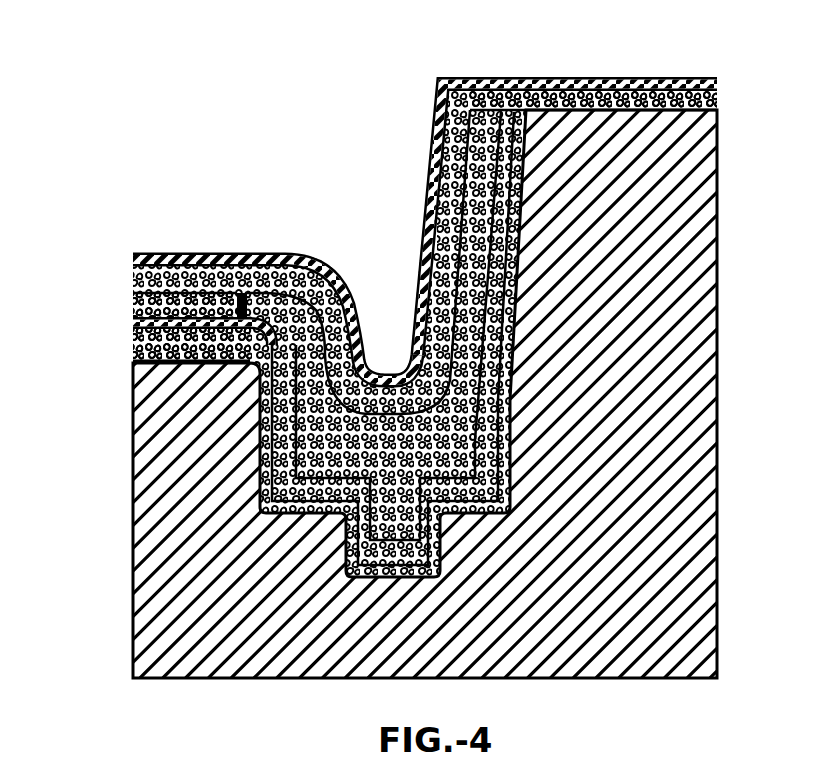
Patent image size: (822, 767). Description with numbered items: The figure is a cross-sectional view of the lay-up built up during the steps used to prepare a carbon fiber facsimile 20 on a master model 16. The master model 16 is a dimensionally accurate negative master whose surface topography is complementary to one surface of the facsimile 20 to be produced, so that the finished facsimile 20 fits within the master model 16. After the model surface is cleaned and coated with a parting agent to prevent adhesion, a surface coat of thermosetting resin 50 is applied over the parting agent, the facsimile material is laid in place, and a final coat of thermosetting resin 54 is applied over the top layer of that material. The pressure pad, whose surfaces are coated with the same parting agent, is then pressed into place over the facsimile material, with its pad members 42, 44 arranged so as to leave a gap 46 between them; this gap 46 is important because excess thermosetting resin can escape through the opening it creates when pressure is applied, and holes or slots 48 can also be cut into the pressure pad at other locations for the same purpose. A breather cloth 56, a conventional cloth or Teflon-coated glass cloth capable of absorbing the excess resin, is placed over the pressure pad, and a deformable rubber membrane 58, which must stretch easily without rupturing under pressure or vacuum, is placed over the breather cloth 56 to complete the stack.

The master model 16 is at (131, 560).
The facsimile 20 is at (131, 343).
The pad member 42 is at (131, 303).
The pad member 44 is at (236, 290).
The gap 46 is at (205, 253).
The holes or slots 48 is at (410, 290).
The surface coat of thermosetting resin 50 is at (131, 363).
The final coat of thermosetting resin 54 is at (131, 321).
The breather cloth 56 is at (716, 101).
The deformable rubber membrane 58 is at (682, 76).